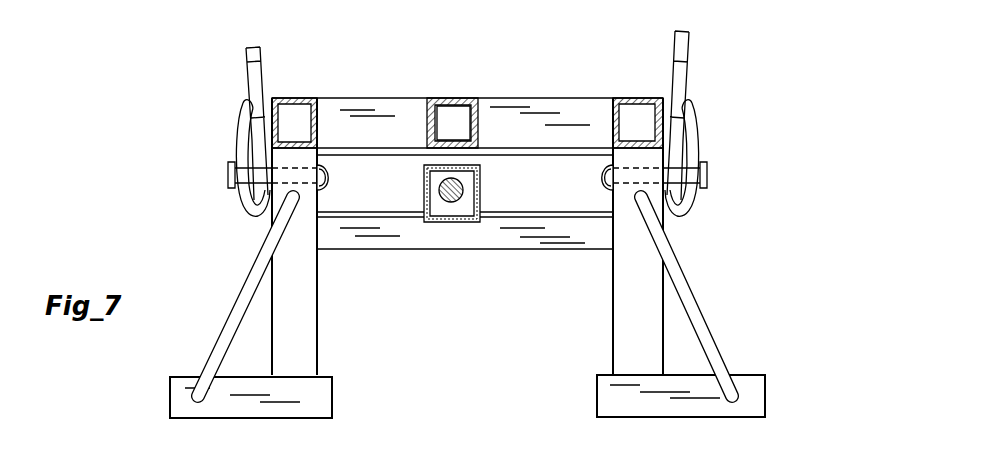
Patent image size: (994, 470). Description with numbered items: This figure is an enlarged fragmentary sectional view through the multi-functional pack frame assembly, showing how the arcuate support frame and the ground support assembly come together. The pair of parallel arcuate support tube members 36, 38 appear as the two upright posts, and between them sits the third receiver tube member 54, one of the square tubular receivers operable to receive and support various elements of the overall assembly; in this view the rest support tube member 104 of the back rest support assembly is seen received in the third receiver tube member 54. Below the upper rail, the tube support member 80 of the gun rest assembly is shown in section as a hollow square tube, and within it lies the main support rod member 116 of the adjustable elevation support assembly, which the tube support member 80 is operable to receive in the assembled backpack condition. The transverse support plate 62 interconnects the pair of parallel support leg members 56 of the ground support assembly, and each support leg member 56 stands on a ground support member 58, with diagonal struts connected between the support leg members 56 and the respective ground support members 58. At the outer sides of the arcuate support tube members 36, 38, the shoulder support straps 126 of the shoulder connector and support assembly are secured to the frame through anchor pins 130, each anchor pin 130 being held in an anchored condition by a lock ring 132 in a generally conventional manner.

The arcuate support tube member 36 is at (324, 58).
The arcuate support tube member 38 is at (636, 97).
The third receiver tube member 54 is at (426, 110).
The rest support tube member 104 is at (463, 112).
The transverse support plate 62 is at (592, 238).
The tube support member 80 is at (464, 222).
The main support rod member 116 is at (445, 203).
The anchor pin 130 is at (228, 175).
The lock ring 132 is at (336, 172).
The shoulder support strap 126 is at (240, 120).
The ground support member 58 is at (315, 387).
The support leg member 56 is at (312, 320).